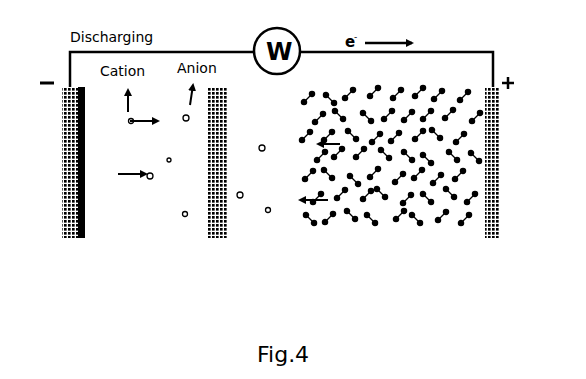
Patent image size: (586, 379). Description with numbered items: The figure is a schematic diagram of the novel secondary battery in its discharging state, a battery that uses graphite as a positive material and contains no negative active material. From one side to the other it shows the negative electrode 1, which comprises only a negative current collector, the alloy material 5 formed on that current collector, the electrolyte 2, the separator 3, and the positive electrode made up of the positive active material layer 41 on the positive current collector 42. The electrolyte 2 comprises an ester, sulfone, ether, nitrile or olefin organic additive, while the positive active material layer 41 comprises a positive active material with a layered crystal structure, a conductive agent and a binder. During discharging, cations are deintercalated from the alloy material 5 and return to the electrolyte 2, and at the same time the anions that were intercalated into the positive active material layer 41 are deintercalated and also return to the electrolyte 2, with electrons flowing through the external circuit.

The negative electrode 1 is at (67, 223).
The alloy material 5 is at (82, 213).
The electrolyte 2 is at (138, 222).
The separator 3 is at (222, 225).
The positive active material layer 41 is at (322, 235).
The positive current collector 42 is at (497, 225).